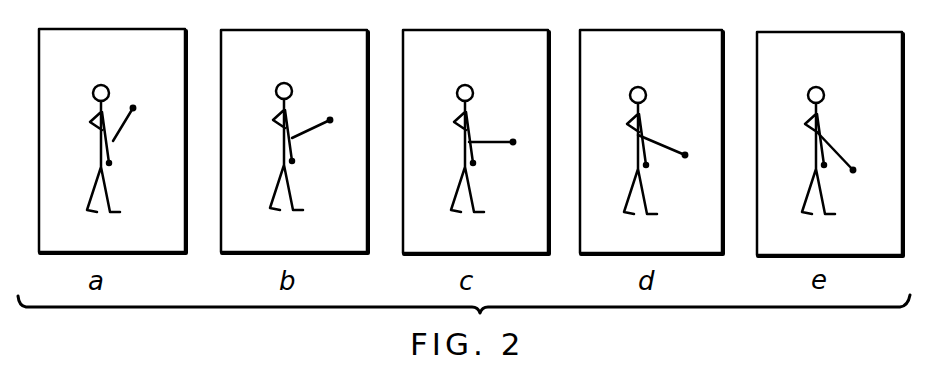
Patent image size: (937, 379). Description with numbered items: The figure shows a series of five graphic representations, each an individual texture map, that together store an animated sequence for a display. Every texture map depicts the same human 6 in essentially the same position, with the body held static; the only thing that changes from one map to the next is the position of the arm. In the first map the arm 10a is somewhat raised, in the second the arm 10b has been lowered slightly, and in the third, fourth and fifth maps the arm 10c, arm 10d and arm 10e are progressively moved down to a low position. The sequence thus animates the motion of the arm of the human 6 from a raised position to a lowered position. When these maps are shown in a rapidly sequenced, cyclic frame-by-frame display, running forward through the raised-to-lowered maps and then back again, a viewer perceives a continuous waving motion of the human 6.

The human 6 is at (97, 170).
The arm 10a is at (127, 119).
The arm 10b is at (307, 136).
The arm 10c is at (497, 143).
The arm 10d is at (685, 126).
The arm 10e is at (837, 152).